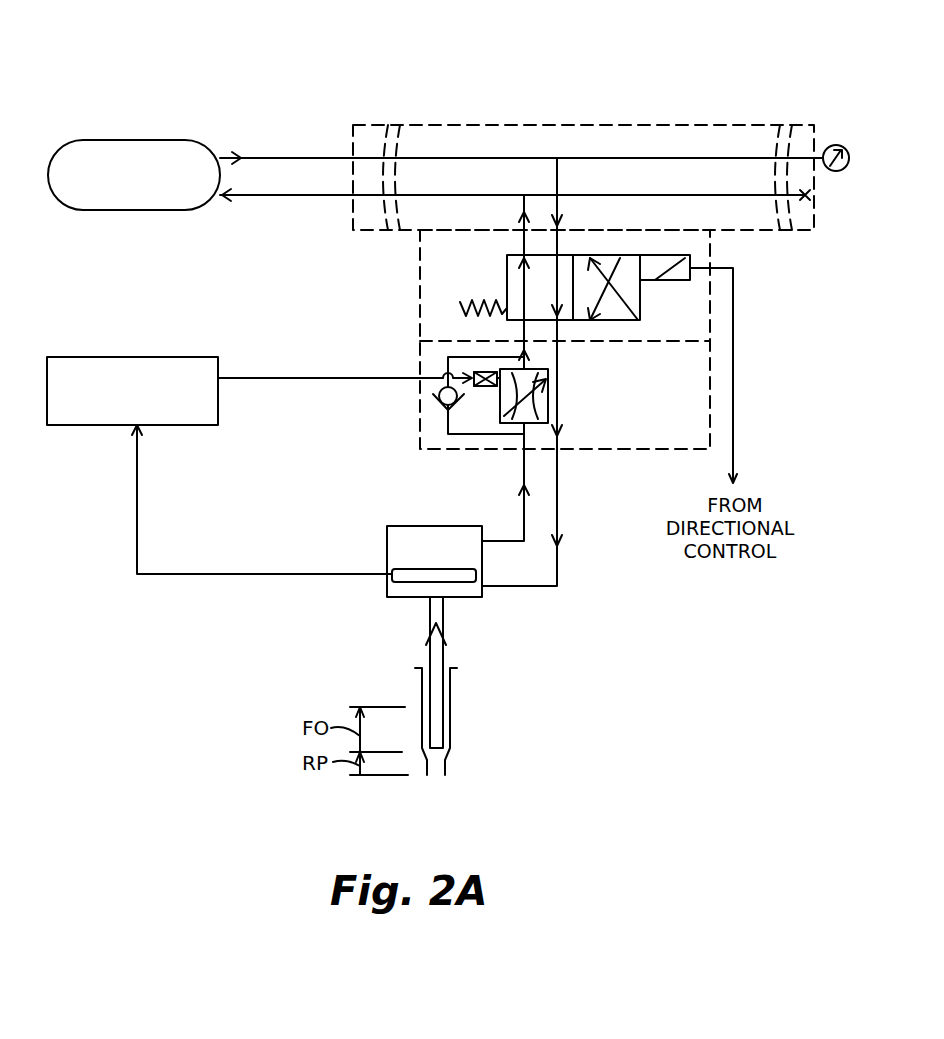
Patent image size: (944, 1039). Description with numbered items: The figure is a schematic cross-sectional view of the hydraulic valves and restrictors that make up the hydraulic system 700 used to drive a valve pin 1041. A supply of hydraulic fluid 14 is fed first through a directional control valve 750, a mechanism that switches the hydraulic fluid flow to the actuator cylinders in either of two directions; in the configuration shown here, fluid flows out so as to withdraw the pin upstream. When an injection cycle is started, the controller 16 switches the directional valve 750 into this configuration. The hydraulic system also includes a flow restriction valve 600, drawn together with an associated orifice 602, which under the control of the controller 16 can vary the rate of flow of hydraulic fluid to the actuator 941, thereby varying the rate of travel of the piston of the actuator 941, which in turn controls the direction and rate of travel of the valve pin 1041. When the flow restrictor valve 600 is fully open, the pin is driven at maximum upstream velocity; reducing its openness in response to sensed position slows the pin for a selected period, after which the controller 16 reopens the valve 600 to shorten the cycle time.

The supply of hydraulic fluid 14 is at (145, 140).
The controller 16 is at (137, 357).
The hydraulic system 700 is at (513, 105).
The directional control valve 750 is at (505, 274).
The fixed orifice 602 is at (486, 372).
The flow restriction valve 600 is at (553, 392).
The actuator 941 is at (402, 526).
The valve pin 1041 is at (446, 612).